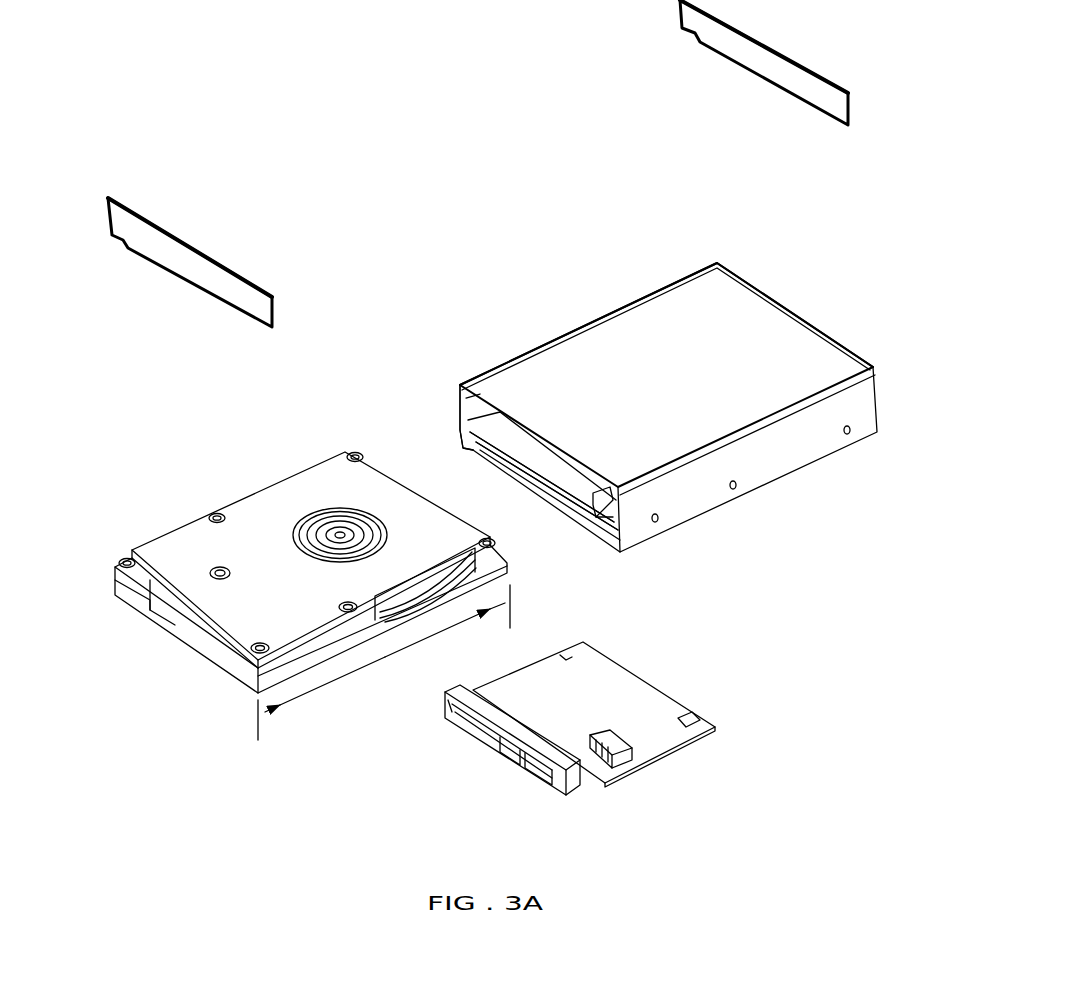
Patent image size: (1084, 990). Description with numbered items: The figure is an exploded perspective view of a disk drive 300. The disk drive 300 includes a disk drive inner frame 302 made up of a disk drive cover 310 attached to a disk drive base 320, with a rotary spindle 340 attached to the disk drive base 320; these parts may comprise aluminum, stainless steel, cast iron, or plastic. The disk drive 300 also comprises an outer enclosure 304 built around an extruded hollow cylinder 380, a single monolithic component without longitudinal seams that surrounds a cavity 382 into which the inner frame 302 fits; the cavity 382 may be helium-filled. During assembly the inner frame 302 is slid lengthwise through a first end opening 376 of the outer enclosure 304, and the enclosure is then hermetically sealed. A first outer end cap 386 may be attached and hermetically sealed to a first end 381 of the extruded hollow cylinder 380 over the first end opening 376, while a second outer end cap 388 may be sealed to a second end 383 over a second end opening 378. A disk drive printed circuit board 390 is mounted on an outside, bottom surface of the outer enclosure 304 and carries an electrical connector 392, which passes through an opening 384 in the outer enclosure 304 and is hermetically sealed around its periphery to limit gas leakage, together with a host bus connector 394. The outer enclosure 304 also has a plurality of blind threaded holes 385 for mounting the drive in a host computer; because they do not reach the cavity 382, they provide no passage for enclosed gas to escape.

The disk drive 300 is at (328, 82).
The disk drive inner frame 302 is at (210, 500).
The outer enclosure 304 is at (623, 290).
The disk drive cover 310 is at (262, 505).
The disk drive base 320 is at (218, 650).
The rotary spindle 340 is at (332, 512).
The first end opening 376 is at (562, 467).
The second end opening 378 is at (824, 332).
The extruded hollow cylinder 380 is at (520, 370).
The first end 381 is at (466, 440).
The cavity 382 is at (520, 447).
The second end 383 is at (747, 280).
The opening 384 is at (603, 502).
The blind threaded holes 385 is at (655, 522).
The first outer end cap 386 is at (192, 273).
The second outer end cap 388 is at (775, 72).
The disk drive printed circuit board 390 is at (608, 682).
The electrical connector 392 is at (607, 772).
The host bus connector 394 is at (462, 718).